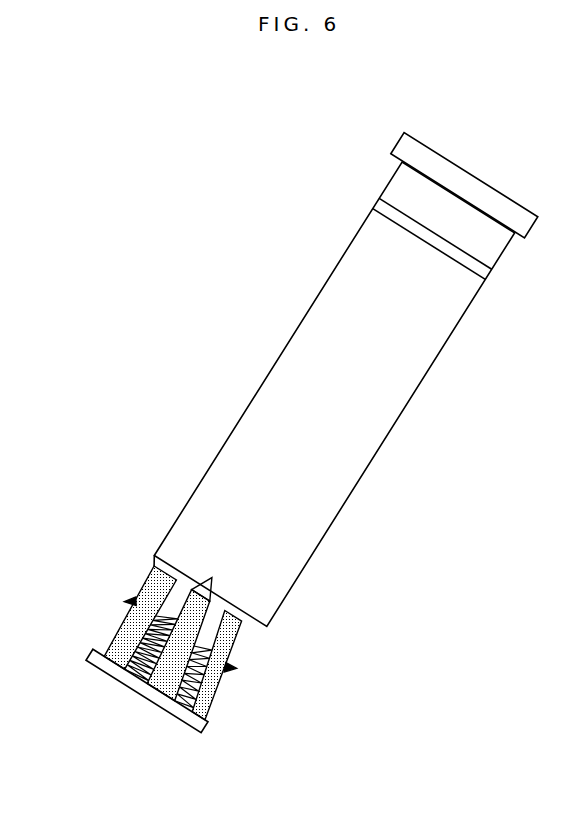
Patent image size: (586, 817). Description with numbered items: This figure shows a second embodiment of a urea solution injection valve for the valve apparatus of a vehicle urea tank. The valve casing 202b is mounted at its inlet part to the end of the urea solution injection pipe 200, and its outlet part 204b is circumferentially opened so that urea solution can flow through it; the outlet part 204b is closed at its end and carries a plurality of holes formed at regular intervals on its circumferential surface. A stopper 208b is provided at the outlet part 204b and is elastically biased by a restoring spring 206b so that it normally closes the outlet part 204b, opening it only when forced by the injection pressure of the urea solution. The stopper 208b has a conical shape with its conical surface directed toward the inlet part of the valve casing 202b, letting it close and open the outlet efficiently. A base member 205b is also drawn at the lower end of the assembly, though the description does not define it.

The urea solution injection pipe 200 is at (308, 246).
The valve casing 202b is at (380, 433).
The outlet part 204b is at (243, 598).
The base plate 205b is at (222, 698).
The restoring spring 206b is at (136, 672).
The stopper 208b is at (222, 628).